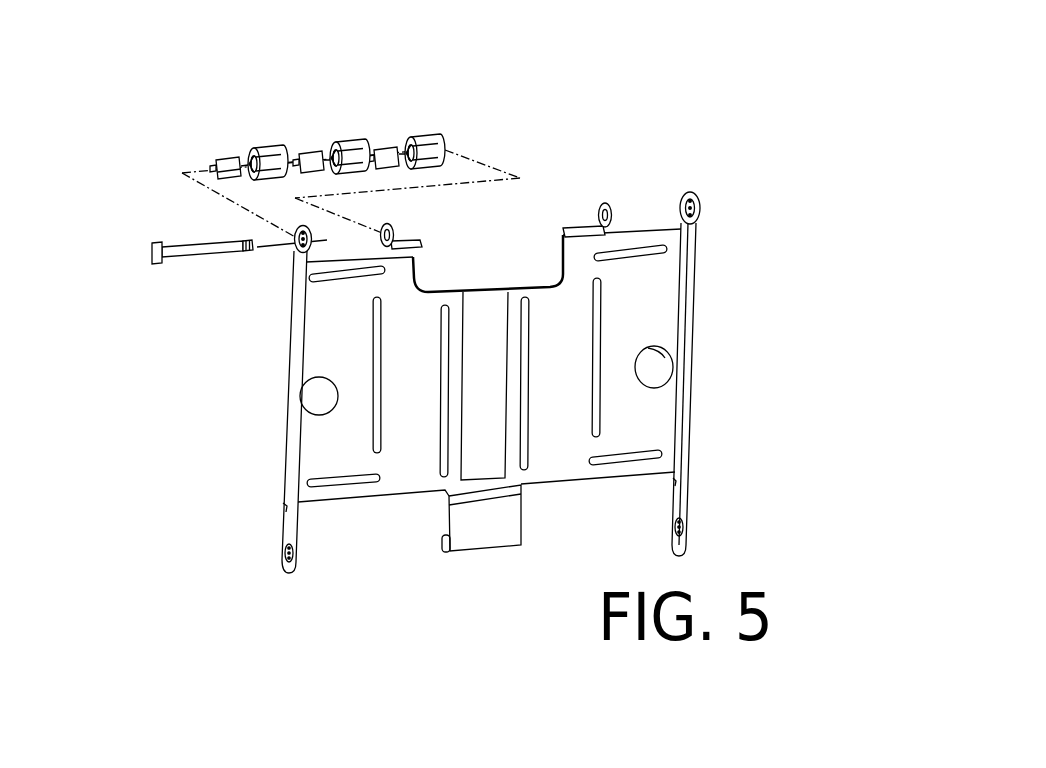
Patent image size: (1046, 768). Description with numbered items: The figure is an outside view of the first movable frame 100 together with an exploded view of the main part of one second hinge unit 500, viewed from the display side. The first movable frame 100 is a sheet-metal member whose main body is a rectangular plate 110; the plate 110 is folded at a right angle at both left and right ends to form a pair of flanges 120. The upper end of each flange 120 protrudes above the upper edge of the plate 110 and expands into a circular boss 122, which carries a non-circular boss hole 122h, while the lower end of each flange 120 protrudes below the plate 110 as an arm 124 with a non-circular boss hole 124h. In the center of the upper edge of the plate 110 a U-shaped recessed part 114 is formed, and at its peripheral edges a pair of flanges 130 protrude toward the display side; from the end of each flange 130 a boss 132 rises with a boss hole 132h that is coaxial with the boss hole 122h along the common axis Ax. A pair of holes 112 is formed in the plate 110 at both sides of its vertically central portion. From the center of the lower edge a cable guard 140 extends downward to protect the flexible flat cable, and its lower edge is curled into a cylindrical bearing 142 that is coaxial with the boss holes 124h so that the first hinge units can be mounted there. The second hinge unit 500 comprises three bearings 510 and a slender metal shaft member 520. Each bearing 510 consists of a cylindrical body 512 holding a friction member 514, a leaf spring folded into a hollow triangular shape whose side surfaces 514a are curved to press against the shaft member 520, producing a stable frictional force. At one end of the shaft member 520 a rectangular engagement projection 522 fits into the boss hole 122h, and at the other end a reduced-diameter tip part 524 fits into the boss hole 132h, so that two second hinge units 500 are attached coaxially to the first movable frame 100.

The first movable frame 100 is at (632, 71).
The rotation axis Ax is at (195, 168).
The second hinge unit 500 is at (266, 192).
The bearing 510 is at (262, 104).
The cylindrical body 512 is at (267, 147).
The friction member 514 is at (230, 158).
The side surface 514a is at (233, 178).
The metal shaft member 520 is at (177, 243).
The engagement projection 522 is at (160, 264).
The tip part 524 is at (253, 251).
The plate 110 is at (647, 307).
The hole 112 is at (652, 348).
The recessed part 114 is at (556, 274).
The flange 120 is at (690, 412).
The boss 122 is at (692, 193).
The boss hole 122h is at (300, 250).
The arm 124 is at (688, 520).
The boss hole 124h is at (670, 532).
The flange 130 is at (563, 231).
The boss 132 is at (604, 205).
The boss hole 132h is at (390, 227).
The cable guard 140 is at (510, 521).
The bearing 142 is at (442, 548).